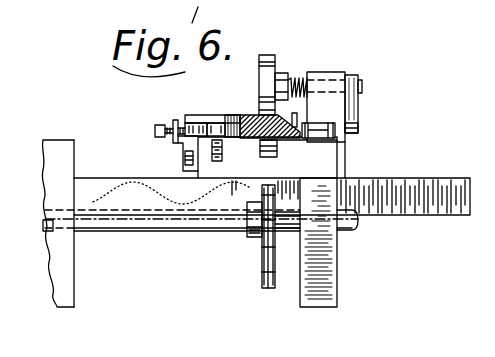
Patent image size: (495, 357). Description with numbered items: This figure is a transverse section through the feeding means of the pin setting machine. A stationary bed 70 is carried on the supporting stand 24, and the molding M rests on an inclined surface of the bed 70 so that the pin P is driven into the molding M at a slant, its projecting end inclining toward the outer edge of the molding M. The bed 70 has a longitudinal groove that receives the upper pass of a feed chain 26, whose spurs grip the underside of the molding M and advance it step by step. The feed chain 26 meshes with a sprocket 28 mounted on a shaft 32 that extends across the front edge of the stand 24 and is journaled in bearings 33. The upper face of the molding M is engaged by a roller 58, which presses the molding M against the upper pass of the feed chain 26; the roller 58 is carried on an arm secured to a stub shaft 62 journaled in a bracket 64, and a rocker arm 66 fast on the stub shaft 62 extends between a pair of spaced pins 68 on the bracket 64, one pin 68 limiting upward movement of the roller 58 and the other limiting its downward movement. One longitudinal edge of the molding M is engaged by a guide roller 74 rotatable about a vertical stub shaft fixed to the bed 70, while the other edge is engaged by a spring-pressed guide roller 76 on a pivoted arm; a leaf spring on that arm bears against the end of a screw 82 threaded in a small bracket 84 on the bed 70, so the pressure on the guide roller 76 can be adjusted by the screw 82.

The stand 24 is at (450, 178).
The feed chain 26 is at (277, 152).
The sprocket 28 is at (262, 288).
The shaft 32 is at (158, 223).
The bearing 33 is at (68, 293).
The roller 58 is at (270, 53).
The stub shaft 62 is at (298, 72).
The bracket 64 is at (330, 72).
The rocker arm 66 is at (353, 100).
The pin 68 is at (358, 127).
The bed 70 is at (63, 158).
The guide roller 74 is at (332, 120).
The guide roller 76 is at (200, 112).
The screw 82 is at (164, 126).
The bracket 84 is at (175, 143).
The molding M is at (248, 113).
The pin P is at (297, 118).